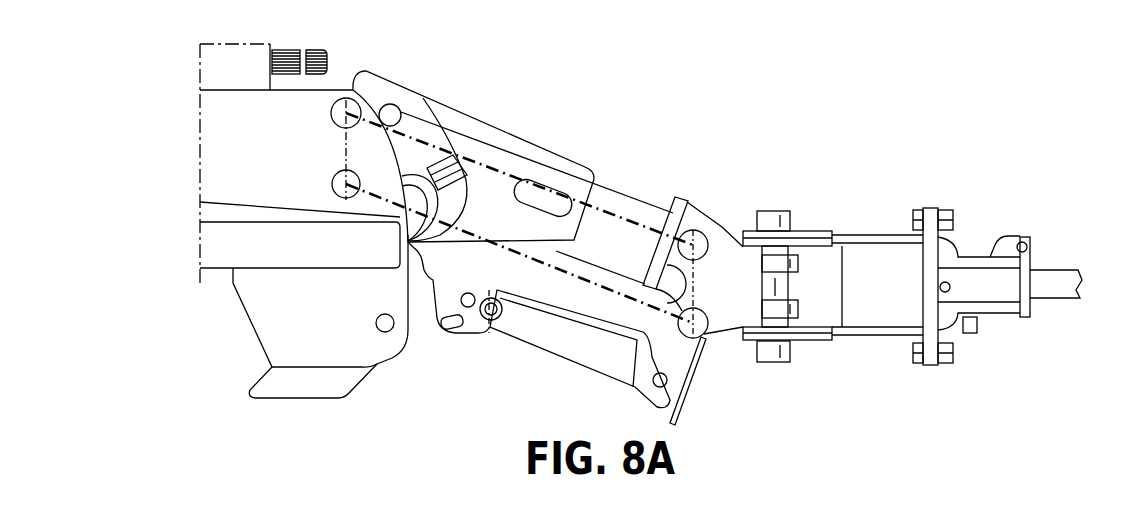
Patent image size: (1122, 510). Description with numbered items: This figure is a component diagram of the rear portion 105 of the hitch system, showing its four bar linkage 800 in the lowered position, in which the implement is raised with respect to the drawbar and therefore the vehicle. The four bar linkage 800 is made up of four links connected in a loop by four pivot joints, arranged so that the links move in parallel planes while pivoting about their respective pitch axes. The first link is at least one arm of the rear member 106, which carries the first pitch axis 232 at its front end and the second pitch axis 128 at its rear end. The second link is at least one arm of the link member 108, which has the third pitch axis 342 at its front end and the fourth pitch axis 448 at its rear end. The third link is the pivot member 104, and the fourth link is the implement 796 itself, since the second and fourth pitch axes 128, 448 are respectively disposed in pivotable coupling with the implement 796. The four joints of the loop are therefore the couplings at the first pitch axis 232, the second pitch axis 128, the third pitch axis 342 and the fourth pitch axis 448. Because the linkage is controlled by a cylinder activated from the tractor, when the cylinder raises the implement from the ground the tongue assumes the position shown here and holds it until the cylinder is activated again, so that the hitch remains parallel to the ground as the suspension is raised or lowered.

The pivot member 104 is at (707, 276).
The rear portion 105 is at (470, 97).
The rear member 106 is at (613, 186).
The link member 108 is at (446, 335).
The second pitch axis 128 is at (349, 99).
The first pitch axis 232 is at (696, 234).
The third pitch axis 342 is at (704, 337).
The fourth pitch axis 448 is at (348, 200).
The implement 796 is at (344, 148).
The four bar linkage 800 is at (512, 177).